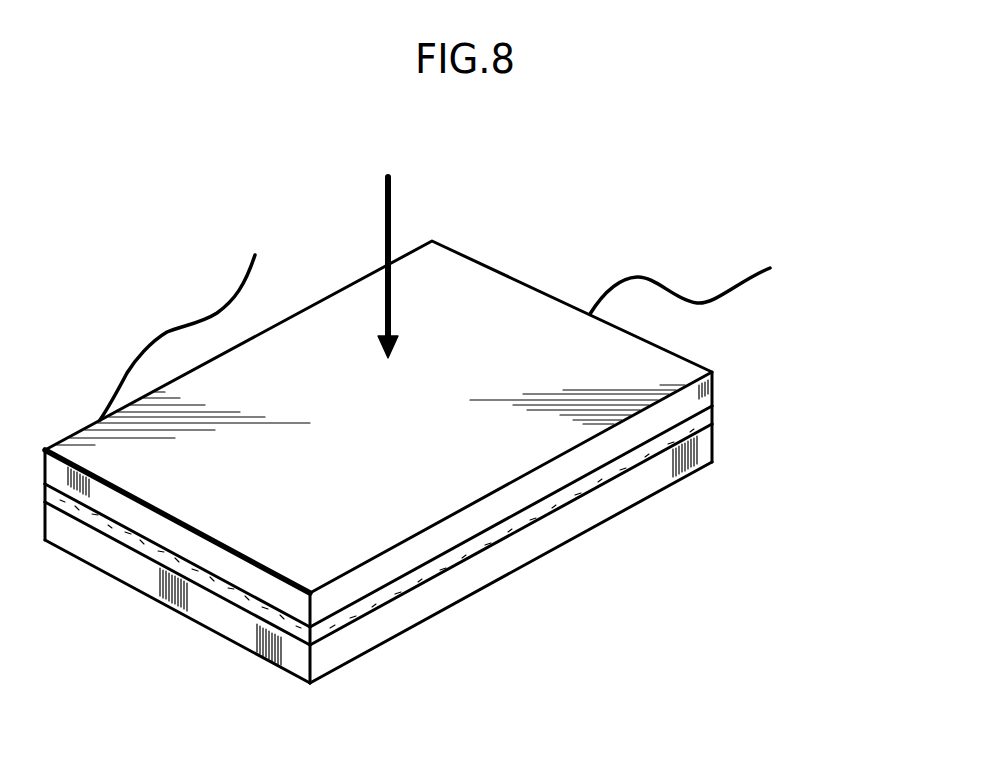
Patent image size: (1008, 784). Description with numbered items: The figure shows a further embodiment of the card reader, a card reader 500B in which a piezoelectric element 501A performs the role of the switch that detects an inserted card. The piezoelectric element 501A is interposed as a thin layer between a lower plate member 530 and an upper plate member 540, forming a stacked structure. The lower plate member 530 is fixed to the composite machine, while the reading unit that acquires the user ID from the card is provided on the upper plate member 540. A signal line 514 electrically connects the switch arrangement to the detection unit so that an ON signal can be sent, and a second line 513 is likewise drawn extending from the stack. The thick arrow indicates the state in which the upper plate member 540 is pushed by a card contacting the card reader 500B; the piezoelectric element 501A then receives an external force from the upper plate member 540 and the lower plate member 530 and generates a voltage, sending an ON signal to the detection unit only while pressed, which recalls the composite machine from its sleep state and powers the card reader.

The card reader 500B is at (458, 430).
The upper plate member 540 is at (447, 270).
The piezoelectric element 501A is at (706, 412).
The lower plate member 530 is at (533, 543).
The incident light path 513 is at (195, 320).
The signal line 514 is at (710, 300).